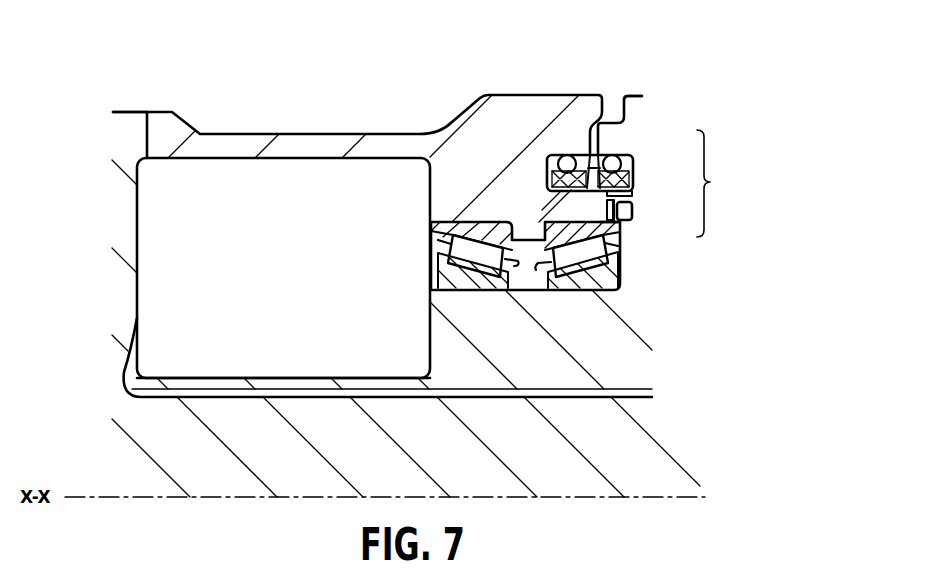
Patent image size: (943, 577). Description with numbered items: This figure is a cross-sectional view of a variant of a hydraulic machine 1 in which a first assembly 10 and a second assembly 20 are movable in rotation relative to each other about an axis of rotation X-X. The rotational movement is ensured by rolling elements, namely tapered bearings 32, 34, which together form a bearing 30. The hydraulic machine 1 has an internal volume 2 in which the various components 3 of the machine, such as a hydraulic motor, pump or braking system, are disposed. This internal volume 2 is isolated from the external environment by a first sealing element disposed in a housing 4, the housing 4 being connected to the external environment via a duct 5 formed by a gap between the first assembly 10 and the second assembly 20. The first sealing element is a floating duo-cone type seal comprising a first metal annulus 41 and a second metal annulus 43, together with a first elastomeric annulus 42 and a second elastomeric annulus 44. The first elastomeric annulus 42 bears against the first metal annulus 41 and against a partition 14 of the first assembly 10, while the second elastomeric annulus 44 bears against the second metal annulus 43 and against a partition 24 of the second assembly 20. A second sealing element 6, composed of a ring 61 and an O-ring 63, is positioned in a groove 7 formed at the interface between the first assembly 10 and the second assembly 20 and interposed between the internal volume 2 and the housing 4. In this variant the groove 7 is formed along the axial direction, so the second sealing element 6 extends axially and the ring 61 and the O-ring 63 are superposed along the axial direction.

The hydraulic machine 1 is at (272, 66).
The internal volume 2 is at (436, 284).
The components 3 is at (298, 283).
The housing 4 is at (550, 172).
The duct 5 is at (593, 137).
The second sealing element 6 is at (642, 230).
The groove 7 is at (634, 221).
The first assembly 10 is at (506, 108).
The partition 14 is at (567, 159).
The second assembly 20 is at (643, 96).
The partition 24 is at (614, 158).
The bearing 30 is at (478, 332).
The tapered bearing 32 is at (496, 291).
The tapered bearing 34 is at (572, 291).
The first metal annulus 41 is at (631, 192).
The first elastomeric annulus 42 is at (634, 210).
The second metal annulus 43 is at (629, 180).
The second elastomeric annulus 44 is at (631, 162).
The ring 61 is at (608, 210).
The O-ring 63 is at (620, 228).